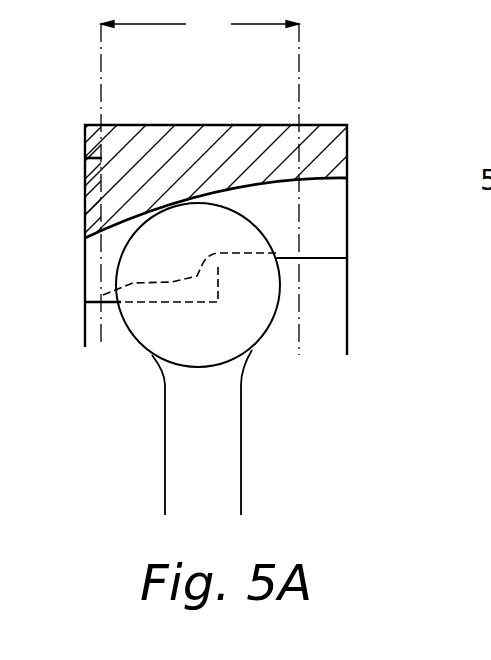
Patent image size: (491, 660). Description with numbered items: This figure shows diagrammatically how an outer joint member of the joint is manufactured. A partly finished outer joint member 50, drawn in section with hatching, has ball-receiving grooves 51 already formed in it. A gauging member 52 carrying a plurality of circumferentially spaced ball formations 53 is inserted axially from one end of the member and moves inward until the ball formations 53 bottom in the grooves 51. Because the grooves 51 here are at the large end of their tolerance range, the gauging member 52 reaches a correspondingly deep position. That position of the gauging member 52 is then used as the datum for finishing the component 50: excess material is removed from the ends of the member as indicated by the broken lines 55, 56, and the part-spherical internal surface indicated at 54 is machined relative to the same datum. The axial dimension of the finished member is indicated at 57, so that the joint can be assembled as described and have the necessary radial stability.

The outer joint member 50 is at (207, 145).
The ball-receiving grooves 51 is at (278, 217).
The gauging member 52 is at (220, 460).
The ball formations 53 is at (257, 313).
The part-spherical internal surface 54 is at (167, 283).
The broken line 55 is at (300, 165).
The broken line 56 is at (100, 158).
The axial dimension 57 is at (200, 181).